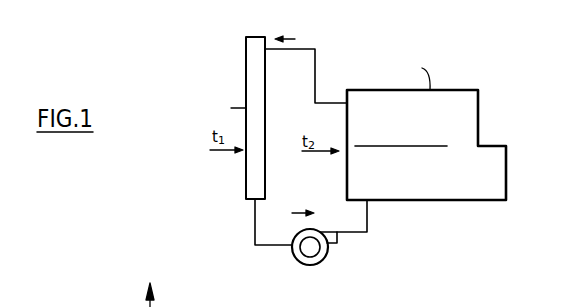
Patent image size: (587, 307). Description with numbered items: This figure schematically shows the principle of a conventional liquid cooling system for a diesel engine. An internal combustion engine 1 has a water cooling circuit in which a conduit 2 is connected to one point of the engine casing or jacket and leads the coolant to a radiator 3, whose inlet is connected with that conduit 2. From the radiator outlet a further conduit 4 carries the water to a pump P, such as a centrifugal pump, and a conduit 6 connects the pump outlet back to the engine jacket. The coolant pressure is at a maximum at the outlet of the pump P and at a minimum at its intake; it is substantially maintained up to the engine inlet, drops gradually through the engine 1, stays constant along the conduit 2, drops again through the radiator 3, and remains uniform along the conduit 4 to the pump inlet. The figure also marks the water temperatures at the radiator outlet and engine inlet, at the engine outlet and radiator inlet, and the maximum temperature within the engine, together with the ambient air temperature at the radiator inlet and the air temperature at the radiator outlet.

The internal combustion engine 1 is at (463, 90).
The conduit 2 is at (298, 49).
The radiator 3 is at (245, 95).
The further conduit 4 is at (255, 238).
The conduit 6 is at (370, 230).
The pump P is at (322, 258).